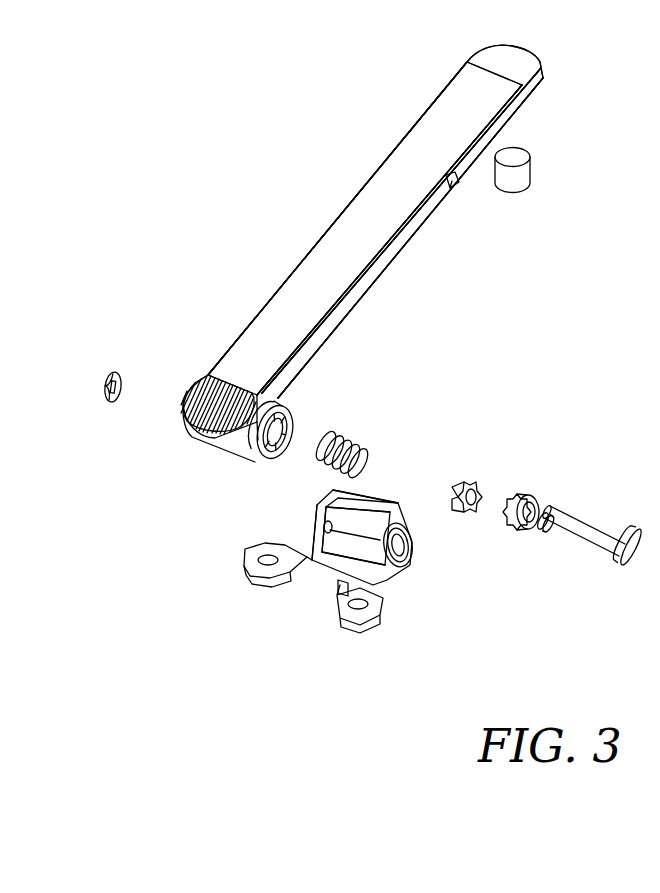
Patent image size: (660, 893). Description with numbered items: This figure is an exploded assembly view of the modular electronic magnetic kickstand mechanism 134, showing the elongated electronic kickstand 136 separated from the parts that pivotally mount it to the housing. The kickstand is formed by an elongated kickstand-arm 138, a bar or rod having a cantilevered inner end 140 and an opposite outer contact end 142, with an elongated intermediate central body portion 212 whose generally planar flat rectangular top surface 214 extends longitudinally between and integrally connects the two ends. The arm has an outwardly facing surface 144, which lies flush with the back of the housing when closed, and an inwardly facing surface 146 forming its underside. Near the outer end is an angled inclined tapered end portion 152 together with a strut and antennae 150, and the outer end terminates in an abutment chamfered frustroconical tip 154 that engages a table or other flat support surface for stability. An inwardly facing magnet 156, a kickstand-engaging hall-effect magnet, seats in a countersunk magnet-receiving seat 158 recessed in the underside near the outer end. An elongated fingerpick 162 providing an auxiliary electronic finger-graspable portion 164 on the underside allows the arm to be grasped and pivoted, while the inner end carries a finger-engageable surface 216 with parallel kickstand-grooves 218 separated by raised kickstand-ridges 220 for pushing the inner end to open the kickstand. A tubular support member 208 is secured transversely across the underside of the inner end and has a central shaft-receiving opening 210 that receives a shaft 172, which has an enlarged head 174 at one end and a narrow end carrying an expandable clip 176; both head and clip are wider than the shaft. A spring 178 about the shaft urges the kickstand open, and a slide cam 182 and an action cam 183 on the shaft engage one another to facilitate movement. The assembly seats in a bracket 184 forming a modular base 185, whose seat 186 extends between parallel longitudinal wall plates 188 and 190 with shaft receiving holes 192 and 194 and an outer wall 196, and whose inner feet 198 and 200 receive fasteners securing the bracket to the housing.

The modular electronic magnetic kickstand mechanism 134 is at (226, 466).
The elongated electronic kickstand 136 is at (330, 331).
The elongated kickstand-arm 138 is at (436, 100).
The cantilevered inner end 140 is at (193, 427).
The outer contact end 142 is at (547, 80).
The outwardly facing surface 144 is at (467, 62).
The inwardly facing surface 146 is at (302, 368).
The strut and antennae 150 is at (453, 193).
The angled inclined tapered end portion 152 is at (498, 127).
The abutment chamfered frustroconical tip 154 is at (522, 52).
The inwardly facing magnet 156 is at (528, 176).
The countersunk magnet-receiving seat 158 is at (519, 98).
The elongated fingerpick 162 is at (345, 297).
The auxiliary electronic finger-graspable portion 164 is at (385, 252).
The shaft 172 is at (600, 520).
The enlarged head 174 is at (618, 553).
The expandable clip 176 is at (100, 384).
The spring 178 is at (357, 437).
The slide cam 182 is at (477, 477).
The action cam 183 is at (525, 490).
The bracket 184 is at (367, 573).
The modular base 185 is at (342, 585).
The seat 186 is at (340, 552).
The longitudinal wall plate 188 is at (320, 503).
The longitudinal wall plate 190 is at (404, 523).
The shaft receiving hole 192 is at (408, 545).
The shaft receiving hole 194 is at (323, 527).
The outer wall 196 is at (350, 500).
The inner foot 198 is at (352, 630).
The inner foot 200 is at (245, 572).
The tubular support member 208 is at (290, 413).
The central shaft-receiving opening 210 is at (286, 450).
The elongated intermediate central body portion 212 is at (338, 215).
The planar flat rectangular top surface 214 is at (403, 157).
The finger-engageable surface 216 is at (193, 393).
The kickstand-grooves 218 is at (208, 373).
The kickstand-ridges 220 is at (180, 398).